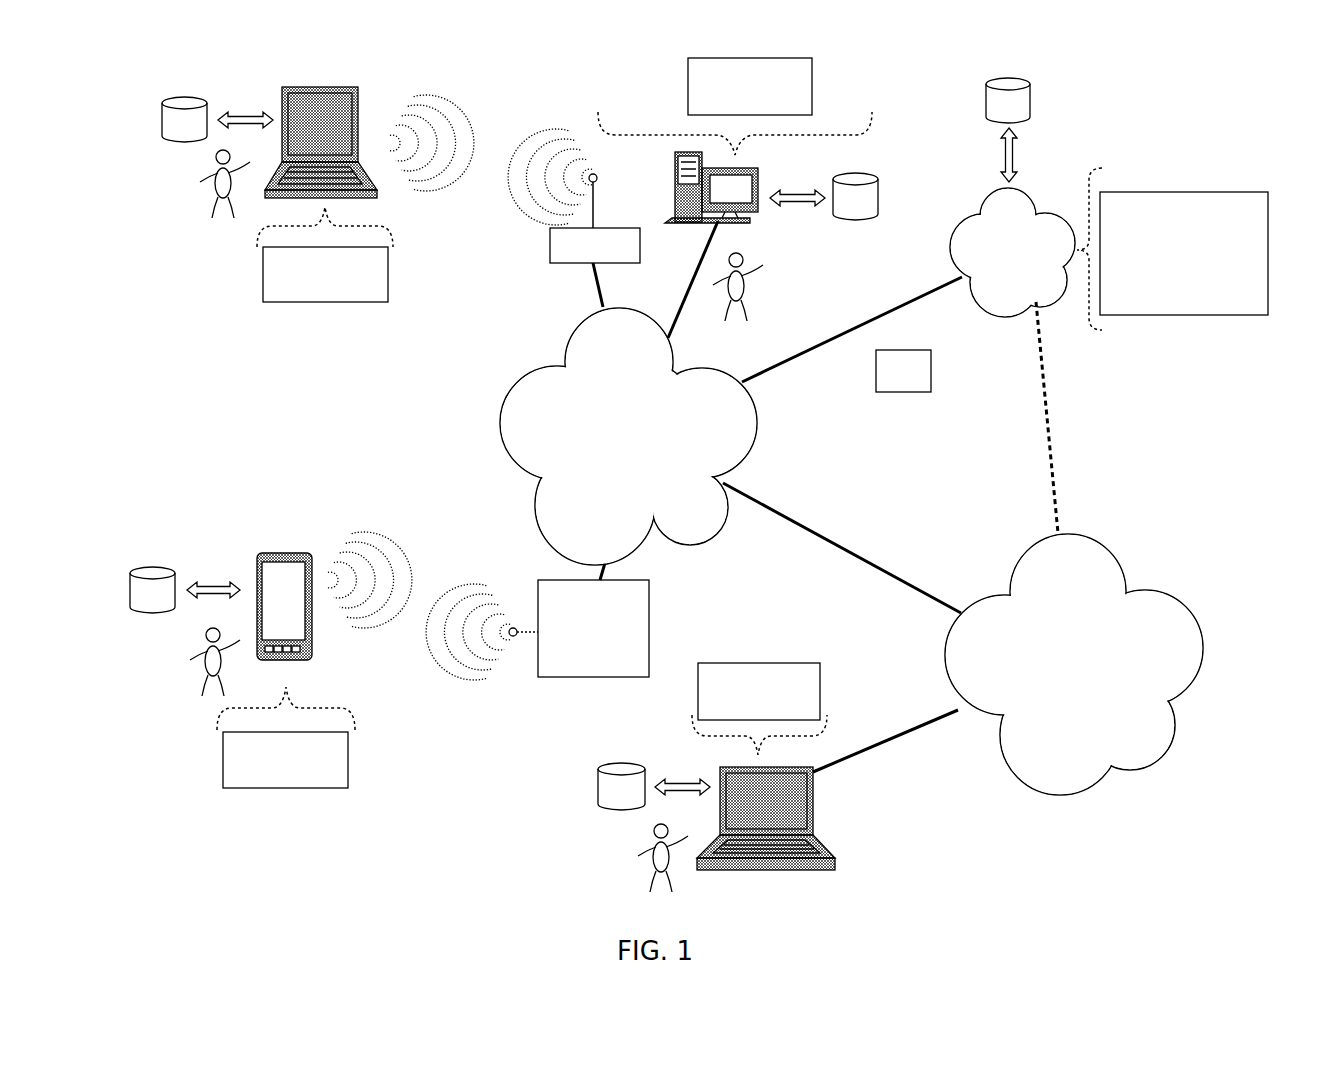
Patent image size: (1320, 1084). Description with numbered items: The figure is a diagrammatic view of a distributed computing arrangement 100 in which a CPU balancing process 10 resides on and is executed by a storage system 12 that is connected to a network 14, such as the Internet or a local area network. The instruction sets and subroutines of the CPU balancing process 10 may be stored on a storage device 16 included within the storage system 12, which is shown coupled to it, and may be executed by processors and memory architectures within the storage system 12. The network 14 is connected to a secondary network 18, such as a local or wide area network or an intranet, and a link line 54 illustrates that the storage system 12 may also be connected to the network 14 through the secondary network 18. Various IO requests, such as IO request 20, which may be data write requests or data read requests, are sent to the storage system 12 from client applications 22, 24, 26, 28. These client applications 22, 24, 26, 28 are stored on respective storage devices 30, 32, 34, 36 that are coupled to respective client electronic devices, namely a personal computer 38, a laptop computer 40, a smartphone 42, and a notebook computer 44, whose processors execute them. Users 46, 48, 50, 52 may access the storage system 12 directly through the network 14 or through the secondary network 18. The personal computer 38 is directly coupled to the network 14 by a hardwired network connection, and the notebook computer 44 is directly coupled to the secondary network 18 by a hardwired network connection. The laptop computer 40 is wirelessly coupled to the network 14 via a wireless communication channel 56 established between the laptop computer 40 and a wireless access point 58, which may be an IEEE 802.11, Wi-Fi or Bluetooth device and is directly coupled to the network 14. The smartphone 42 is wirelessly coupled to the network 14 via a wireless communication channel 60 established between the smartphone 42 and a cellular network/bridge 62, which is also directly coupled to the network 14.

The computing system 100 is at (150, 103).
The CPU balancing process 10 is at (1268, 217).
The storage system 12 is at (1012, 252).
The network 14 is at (731, 445).
The storage device 16 is at (1008, 130).
The secondary network 18 is at (1074, 664).
The IO request 20 is at (931, 373).
The client application 22 is at (687, 97).
The client application 24 is at (388, 278).
The client application 26 is at (348, 753).
The client application 28 is at (820, 695).
The storage device 30 is at (855, 196).
The storage device 32 is at (217, 119).
The storage device 34 is at (185, 590).
The storage device 36 is at (654, 786).
The personal computer 38 is at (758, 185).
The laptop computer 40 is at (353, 111).
The smartphone 42 is at (318, 615).
The notebook computer 44 is at (813, 812).
The user 46 is at (748, 287).
The user 48 is at (189, 174).
The user 50 is at (190, 642).
The user 52 is at (625, 848).
The link line 54 is at (1043, 397).
The wireless communication channel 56 is at (500, 127).
The wireless access point 58 is at (543, 247).
The wireless communication channel 60 is at (428, 580).
The cellular network/bridge 62 is at (649, 595).